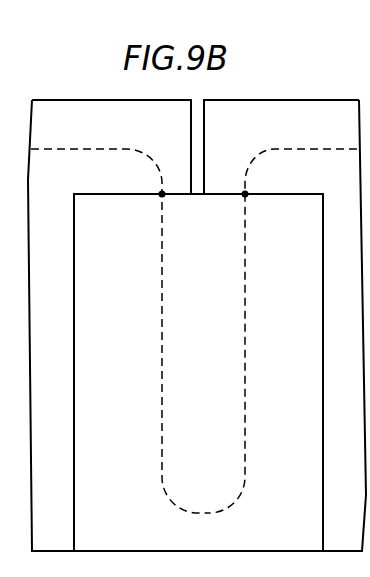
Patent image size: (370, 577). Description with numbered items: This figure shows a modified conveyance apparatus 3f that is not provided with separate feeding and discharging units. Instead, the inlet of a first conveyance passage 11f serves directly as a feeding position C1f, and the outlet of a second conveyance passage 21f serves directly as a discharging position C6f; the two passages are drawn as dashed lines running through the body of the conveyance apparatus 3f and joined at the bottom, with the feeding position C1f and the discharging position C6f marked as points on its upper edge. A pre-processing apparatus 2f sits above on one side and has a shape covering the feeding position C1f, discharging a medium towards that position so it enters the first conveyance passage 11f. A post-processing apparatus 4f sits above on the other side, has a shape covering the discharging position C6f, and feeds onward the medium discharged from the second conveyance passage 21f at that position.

The pre-processing apparatus 2f is at (178, 134).
The post-processing apparatus 4f is at (243, 134).
The conveyance apparatus 3f is at (114, 533).
The first conveyance passage 11f is at (143, 348).
The second conveyance passage 21f is at (282, 340).
The feeding position C1f is at (160, 197).
The discharging position C6f is at (246, 197).